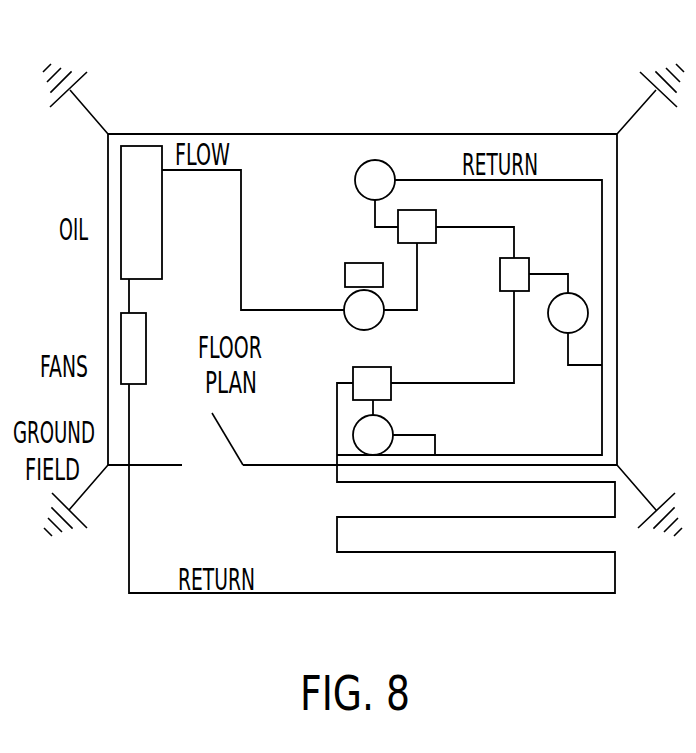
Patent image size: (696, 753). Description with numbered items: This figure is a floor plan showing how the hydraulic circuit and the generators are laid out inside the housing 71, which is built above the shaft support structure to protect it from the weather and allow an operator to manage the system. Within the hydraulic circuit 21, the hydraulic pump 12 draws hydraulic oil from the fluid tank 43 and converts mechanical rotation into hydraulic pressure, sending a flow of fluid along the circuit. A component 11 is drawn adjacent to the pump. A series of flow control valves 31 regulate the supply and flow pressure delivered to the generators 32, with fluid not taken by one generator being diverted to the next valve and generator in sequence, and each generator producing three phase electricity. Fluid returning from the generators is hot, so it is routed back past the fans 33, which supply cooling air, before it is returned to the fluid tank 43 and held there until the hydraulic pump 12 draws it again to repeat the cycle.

The housing 71 is at (500, 90).
The fluid tank 43 is at (132, 210).
The fans 33 is at (132, 350).
The generators 32 is at (355, 180).
The flow control valves 31 is at (437, 220).
The controller 11 is at (362, 275).
The hydraulic circuit 21 is at (418, 290).
The hydraulic pump 12 is at (380, 322).